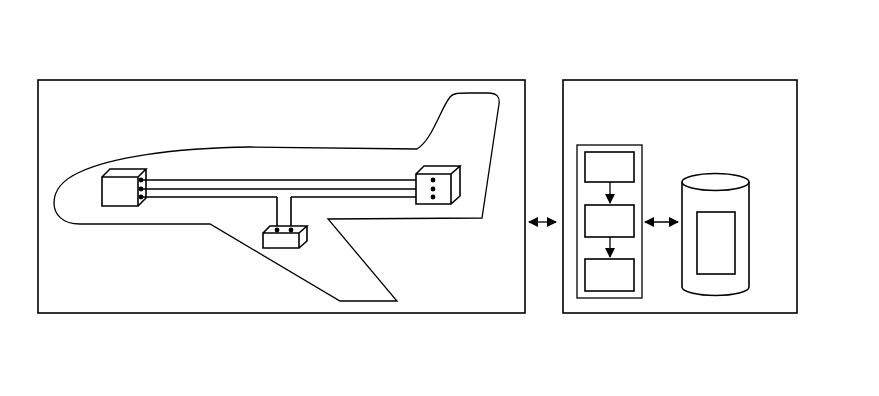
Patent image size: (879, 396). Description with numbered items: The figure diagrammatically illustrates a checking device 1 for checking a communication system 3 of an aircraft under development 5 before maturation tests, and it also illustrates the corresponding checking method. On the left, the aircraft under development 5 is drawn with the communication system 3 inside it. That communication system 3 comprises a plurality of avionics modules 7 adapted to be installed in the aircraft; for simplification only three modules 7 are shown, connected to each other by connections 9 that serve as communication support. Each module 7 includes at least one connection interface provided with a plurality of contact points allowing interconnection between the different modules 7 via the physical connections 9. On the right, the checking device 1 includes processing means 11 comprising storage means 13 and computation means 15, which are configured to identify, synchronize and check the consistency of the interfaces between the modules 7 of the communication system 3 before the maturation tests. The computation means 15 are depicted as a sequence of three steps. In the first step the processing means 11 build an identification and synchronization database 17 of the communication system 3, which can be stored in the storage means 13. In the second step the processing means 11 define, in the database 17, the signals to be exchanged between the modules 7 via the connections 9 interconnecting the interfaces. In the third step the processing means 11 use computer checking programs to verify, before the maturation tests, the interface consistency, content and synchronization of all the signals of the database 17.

The checking device 1 is at (568, 42).
The communication system 3 is at (238, 156).
The aircraft under development 5 is at (174, 95).
The avionics modules 7 is at (115, 186).
The connections 9 is at (320, 180).
The processing means 11 is at (762, 76).
The storage means 13 is at (728, 178).
The computation means 15 is at (620, 145).
The identification and synchronization database 17 is at (730, 254).